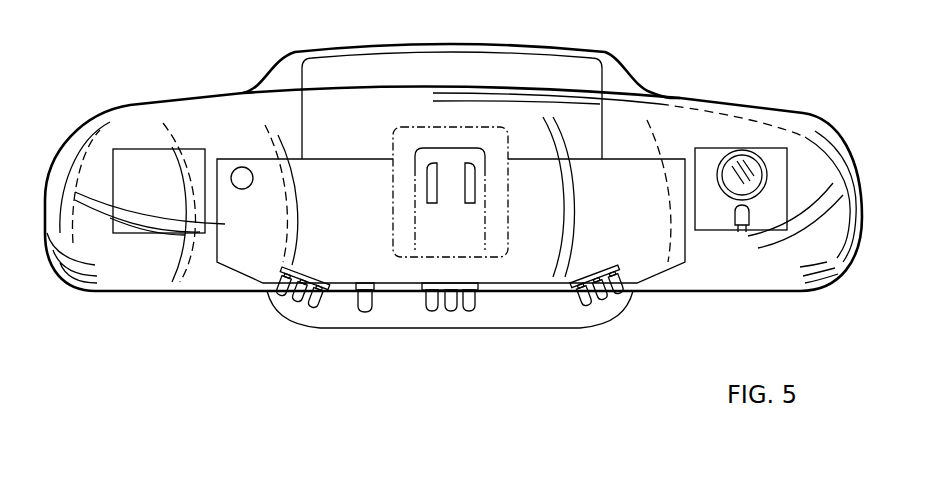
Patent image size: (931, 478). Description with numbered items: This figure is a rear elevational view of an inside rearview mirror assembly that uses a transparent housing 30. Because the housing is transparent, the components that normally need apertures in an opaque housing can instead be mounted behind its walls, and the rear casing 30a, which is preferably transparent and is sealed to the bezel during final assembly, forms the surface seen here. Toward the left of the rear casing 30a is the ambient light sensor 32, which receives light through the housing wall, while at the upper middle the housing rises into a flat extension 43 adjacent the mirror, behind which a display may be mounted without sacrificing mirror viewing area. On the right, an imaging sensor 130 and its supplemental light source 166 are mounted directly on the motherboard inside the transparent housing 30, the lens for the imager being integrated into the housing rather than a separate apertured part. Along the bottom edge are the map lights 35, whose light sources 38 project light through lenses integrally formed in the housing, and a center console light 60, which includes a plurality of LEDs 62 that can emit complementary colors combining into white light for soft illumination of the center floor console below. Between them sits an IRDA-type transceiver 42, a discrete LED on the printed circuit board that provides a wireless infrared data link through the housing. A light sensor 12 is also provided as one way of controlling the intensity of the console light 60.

The light sensor 12 is at (438, 295).
The transparent housing 30 is at (112, 278).
The rear casing 30a is at (723, 127).
The ambient light sensor 32 is at (240, 167).
The map lights 35 is at (267, 307).
The light sources 38 is at (320, 306).
The IRDA-type transceiver 42 is at (365, 313).
The flat extension 43 is at (617, 68).
The center console light 60 is at (421, 358).
The LEDs 62 is at (470, 312).
The imaging sensor 130 is at (757, 172).
The supplemental light source 166 is at (741, 233).